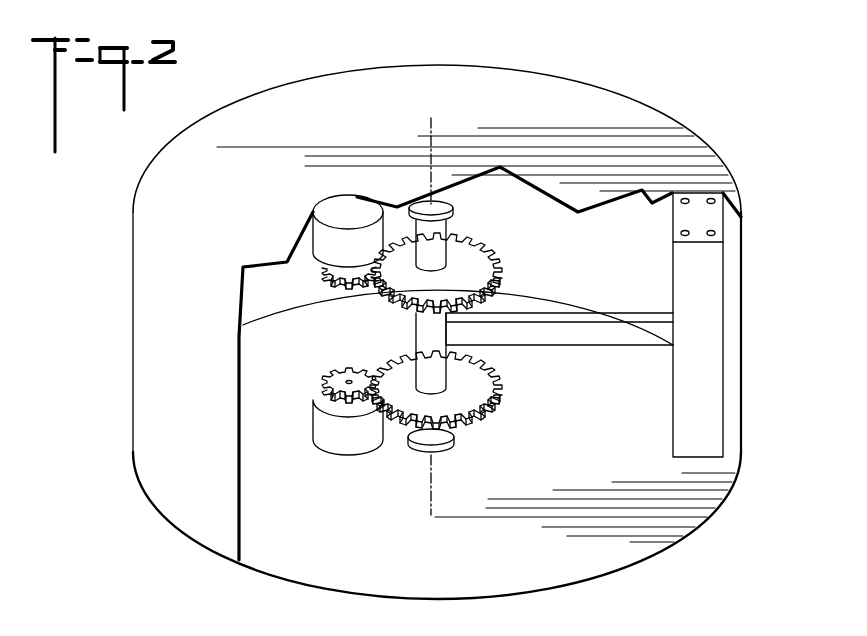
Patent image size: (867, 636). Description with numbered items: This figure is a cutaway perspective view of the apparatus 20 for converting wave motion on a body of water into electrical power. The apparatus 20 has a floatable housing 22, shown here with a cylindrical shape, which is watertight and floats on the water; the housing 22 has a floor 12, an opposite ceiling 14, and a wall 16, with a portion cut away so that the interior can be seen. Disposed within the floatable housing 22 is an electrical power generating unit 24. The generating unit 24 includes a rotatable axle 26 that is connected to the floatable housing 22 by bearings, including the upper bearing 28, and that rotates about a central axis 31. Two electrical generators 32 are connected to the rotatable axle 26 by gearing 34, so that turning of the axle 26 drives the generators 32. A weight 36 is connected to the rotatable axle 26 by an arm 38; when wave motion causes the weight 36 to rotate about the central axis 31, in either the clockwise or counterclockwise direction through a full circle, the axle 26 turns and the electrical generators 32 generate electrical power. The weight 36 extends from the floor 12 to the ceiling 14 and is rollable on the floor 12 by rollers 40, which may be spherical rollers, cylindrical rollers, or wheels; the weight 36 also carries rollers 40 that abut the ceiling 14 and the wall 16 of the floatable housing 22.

The floor 12 is at (523, 485).
The ceiling 14 is at (258, 282).
The wall 16 is at (742, 345).
The apparatus 20 is at (729, 103).
The floatable housing 22 is at (136, 210).
The electrical power generating unit 24 is at (531, 278).
The rotatable axle 26 is at (427, 333).
The upper bearing 28 is at (420, 212).
The central axis 31 is at (430, 130).
The electrical generator 32 is at (330, 248).
The gearing 34 is at (370, 375).
The weight 36 is at (713, 317).
The arm 38 is at (537, 332).
The rollers 40 is at (713, 227).